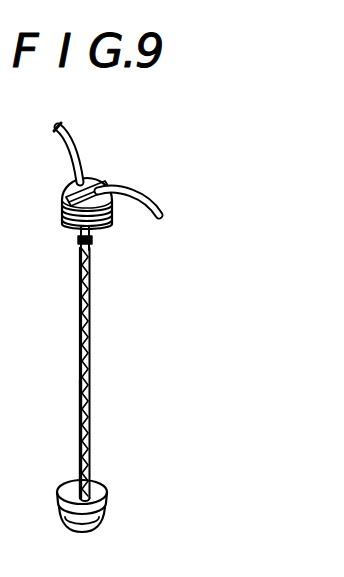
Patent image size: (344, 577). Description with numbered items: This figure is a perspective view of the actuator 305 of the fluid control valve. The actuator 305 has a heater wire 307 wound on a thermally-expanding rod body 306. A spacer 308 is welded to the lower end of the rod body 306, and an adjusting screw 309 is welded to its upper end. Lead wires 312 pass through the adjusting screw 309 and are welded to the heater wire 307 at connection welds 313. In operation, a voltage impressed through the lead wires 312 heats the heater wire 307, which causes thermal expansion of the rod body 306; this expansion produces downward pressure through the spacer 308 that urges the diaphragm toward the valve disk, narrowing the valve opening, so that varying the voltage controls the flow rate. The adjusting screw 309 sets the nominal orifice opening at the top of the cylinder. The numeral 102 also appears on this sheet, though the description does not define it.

The actuator 305 is at (247, 300).
The rod body 306 is at (89, 389).
The heater wire 307 is at (89, 331).
The spacer 308 is at (107, 498).
The adjusting screw 309 is at (101, 179).
The lead wires 312 is at (67, 136).
The connection welds 313 is at (90, 238).
The container 102 is at (17, 501).